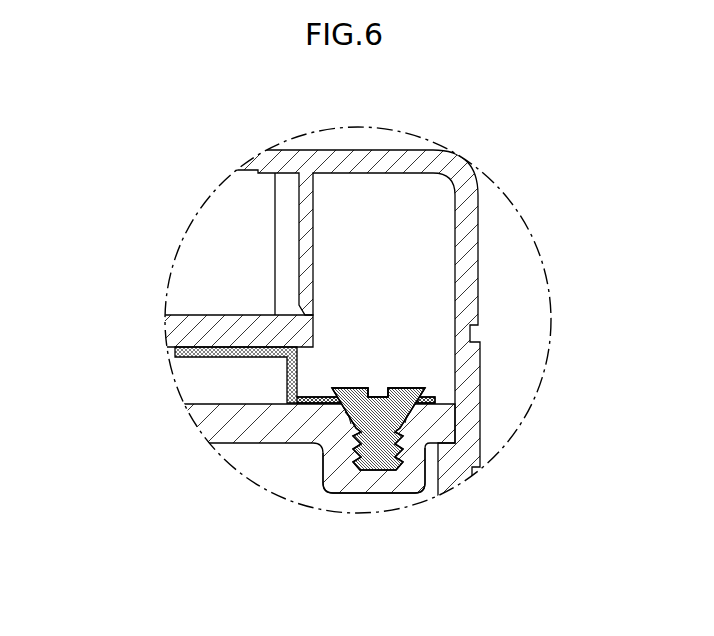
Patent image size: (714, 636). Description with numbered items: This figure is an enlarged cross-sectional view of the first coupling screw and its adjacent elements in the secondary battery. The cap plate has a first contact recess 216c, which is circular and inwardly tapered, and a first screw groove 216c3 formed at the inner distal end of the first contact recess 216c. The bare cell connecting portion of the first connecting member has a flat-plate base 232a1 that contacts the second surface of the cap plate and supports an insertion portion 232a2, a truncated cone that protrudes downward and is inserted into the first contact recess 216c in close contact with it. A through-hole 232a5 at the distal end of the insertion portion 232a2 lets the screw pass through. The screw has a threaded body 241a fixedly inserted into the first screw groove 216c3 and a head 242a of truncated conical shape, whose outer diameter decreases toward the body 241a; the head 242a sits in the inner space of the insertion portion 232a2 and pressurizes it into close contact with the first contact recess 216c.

The first contact recess 216c is at (335, 412).
The first screw groove 216c3 is at (373, 472).
The base 232a1 is at (293, 372).
The insertion portion 232a2 is at (348, 388).
The through-hole 232a5 is at (430, 398).
The body 241a is at (402, 447).
The head 242a is at (388, 389).